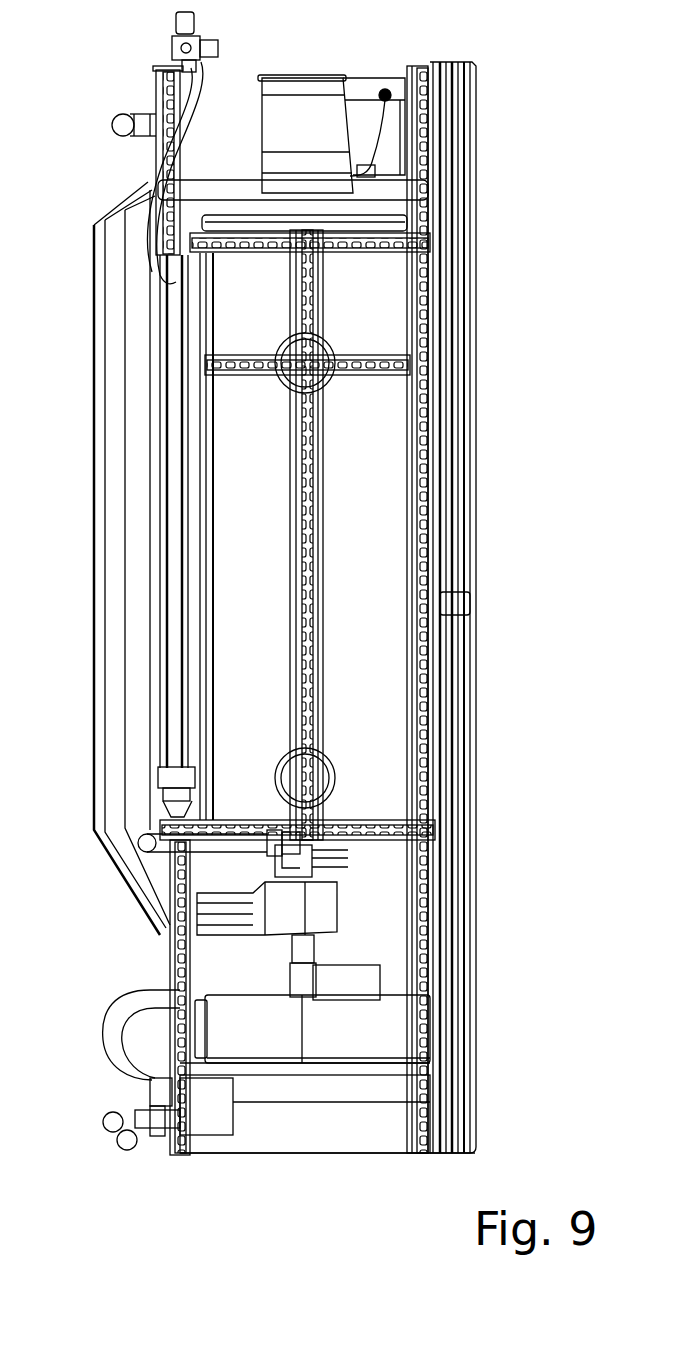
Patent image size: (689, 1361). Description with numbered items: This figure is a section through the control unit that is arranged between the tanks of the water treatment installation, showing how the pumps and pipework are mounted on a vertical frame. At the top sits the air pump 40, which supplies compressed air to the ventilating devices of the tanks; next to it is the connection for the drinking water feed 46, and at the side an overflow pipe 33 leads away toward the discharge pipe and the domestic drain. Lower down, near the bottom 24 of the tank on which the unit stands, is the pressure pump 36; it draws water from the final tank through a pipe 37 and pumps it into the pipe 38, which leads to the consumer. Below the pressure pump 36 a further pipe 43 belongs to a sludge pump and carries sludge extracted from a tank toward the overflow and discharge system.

The drinking water feed 46 is at (218, 45).
The air pump 40 is at (311, 95).
The overflow pipe 33 is at (110, 128).
The pipe 38 is at (180, 843).
The pressure pump 36 is at (257, 1027).
The pipe 37 is at (108, 1035).
The pipe 43 is at (100, 1142).
The bottom 24 is at (323, 1160).